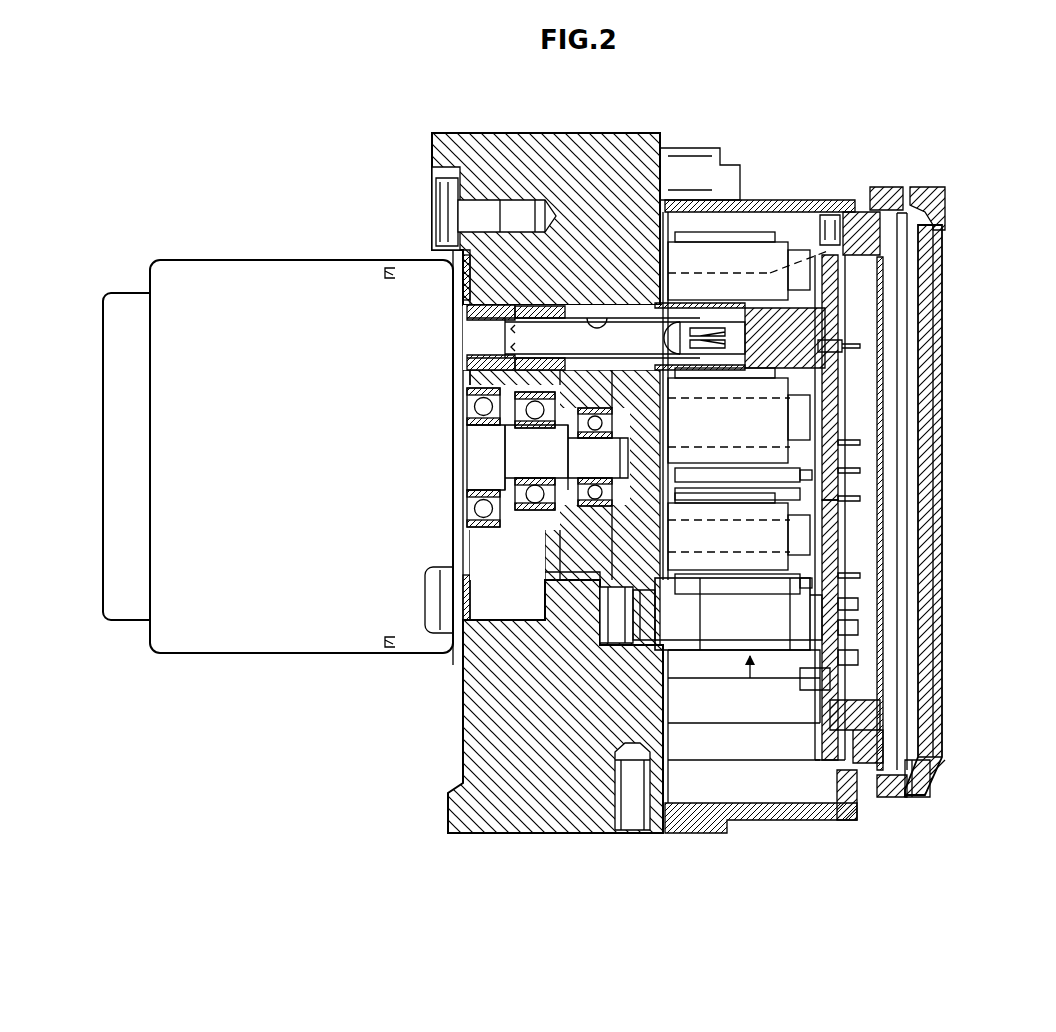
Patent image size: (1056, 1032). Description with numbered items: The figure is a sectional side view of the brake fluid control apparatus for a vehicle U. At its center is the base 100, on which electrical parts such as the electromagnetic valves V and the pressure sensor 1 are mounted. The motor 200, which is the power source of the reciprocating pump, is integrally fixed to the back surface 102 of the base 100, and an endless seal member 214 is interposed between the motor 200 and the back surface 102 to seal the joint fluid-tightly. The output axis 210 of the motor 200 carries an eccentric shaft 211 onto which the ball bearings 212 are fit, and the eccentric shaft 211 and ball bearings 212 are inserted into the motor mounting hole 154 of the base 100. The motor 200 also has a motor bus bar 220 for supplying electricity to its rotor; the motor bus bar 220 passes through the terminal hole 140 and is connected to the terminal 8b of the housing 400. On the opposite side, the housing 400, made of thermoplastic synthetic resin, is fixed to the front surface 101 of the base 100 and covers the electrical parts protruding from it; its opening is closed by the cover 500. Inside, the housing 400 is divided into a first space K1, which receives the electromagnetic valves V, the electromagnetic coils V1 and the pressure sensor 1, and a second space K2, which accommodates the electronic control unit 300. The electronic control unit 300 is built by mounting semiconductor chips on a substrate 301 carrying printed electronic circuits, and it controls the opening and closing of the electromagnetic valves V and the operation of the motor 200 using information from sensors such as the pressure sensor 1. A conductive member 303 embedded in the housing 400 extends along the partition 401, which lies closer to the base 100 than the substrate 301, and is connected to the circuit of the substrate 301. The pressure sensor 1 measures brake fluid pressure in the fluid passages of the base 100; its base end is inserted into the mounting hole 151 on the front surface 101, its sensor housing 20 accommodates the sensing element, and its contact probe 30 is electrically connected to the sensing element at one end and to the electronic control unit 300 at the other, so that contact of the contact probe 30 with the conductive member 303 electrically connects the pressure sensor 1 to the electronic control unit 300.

The brake fluid control apparatus for a vehicle U is at (378, 118).
The base 100 is at (516, 126).
The terminal hole 140 is at (598, 320).
The motor bus bar 220 is at (625, 334).
The motor 200 is at (209, 254).
The endless seal member 214 is at (450, 283).
The eccentric shaft 211 is at (537, 453).
The output axis 210 is at (478, 505).
The ball bearings 212 is at (522, 507).
The motor mounting hole 154 is at (547, 578).
The back surface 102 is at (462, 757).
The mounting hole 151 is at (637, 612).
The front surface 101 is at (696, 833).
The sensor housing 20 is at (720, 617).
The pressure sensor 1 is at (756, 668).
The housing 400 is at (830, 810).
The cover 500 is at (921, 800).
The electromagnetic valves V is at (840, 252).
The terminal 8b is at (825, 347).
The first space K1 is at (810, 384).
The electromagnetic coils V1 is at (850, 370).
The partition 401 is at (830, 443).
The second space K2 is at (858, 543).
The electronic control unit 300 is at (891, 606).
The contact probe 30 is at (838, 603).
The substrate 301 is at (840, 625).
The conductive member 303 is at (840, 655).